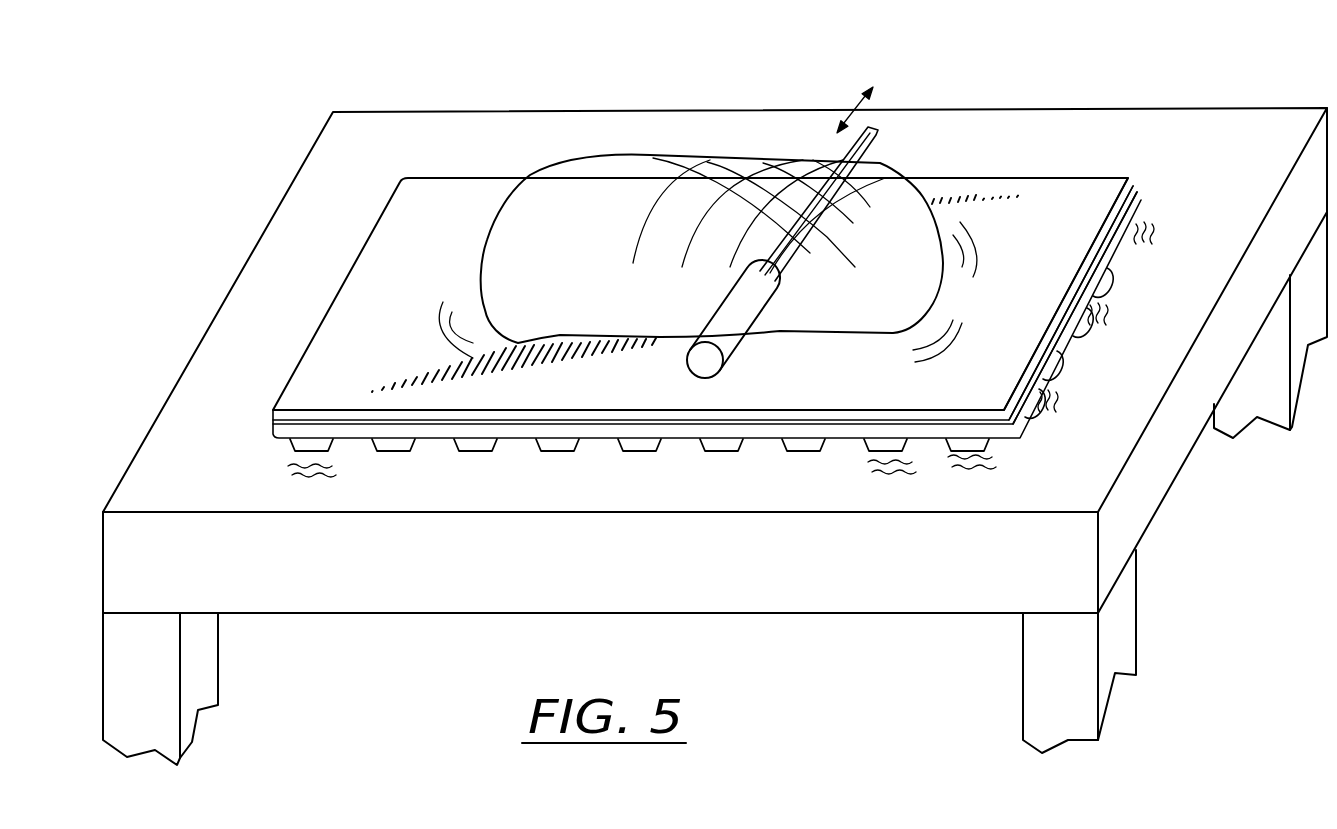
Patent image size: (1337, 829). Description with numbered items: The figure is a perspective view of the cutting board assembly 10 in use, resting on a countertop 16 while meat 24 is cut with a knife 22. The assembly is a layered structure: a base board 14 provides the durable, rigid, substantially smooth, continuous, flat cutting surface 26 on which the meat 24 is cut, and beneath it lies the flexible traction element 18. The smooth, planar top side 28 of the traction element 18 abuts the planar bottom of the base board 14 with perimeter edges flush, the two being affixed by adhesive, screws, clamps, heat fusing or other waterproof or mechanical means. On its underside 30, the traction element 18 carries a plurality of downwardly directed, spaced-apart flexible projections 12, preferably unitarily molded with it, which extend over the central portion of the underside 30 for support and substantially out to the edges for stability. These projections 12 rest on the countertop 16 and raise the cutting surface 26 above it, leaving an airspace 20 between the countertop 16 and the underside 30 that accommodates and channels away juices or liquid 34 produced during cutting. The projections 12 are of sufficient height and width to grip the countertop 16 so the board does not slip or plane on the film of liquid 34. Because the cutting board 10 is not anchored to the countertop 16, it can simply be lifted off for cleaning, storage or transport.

The cutting board assembly 10 is at (1112, 137).
The flexible projections 12 is at (383, 452).
The base board 14 is at (1013, 419).
The countertop 16 is at (385, 145).
The flexible traction element 18 is at (275, 433).
The airspace 20 is at (758, 445).
The knife 22 is at (727, 347).
The meat 24 is at (508, 274).
The cutting surface 26 is at (363, 352).
The top side 28 is at (461, 430).
The underside 30 is at (833, 440).
The juices or liquid 34 is at (937, 350).